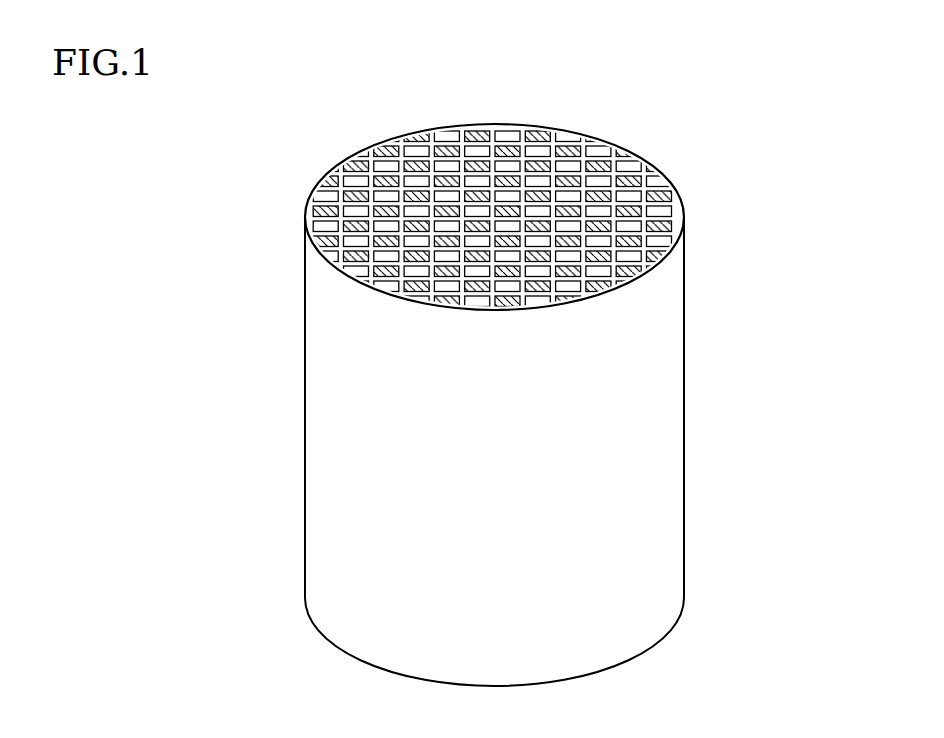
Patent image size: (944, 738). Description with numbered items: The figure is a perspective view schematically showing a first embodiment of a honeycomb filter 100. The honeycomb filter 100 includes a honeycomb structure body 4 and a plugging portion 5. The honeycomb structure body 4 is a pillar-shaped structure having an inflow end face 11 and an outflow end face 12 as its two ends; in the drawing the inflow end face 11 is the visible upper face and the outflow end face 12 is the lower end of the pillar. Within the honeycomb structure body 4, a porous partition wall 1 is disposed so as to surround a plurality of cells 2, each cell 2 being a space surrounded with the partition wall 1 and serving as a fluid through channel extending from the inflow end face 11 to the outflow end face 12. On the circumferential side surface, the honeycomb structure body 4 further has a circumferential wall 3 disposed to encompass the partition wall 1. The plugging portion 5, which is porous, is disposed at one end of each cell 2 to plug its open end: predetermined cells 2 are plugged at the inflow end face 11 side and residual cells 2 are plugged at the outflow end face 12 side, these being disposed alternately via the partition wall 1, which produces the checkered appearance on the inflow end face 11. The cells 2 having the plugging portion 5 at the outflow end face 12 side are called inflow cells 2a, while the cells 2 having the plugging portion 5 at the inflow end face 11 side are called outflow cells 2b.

The honeycomb filter 100 is at (834, 30).
The partition wall 1 is at (580, 170).
The cells 2 is at (540, 186).
The inflow cells 2a is at (598, 212).
The outflow cells 2b is at (625, 243).
The circumferential wall 3 is at (653, 348).
The honeycomb structure body 4 is at (696, 258).
The plugging portion 5 is at (522, 147).
The inflow end face 11 is at (380, 142).
The outflow end face 12 is at (330, 648).